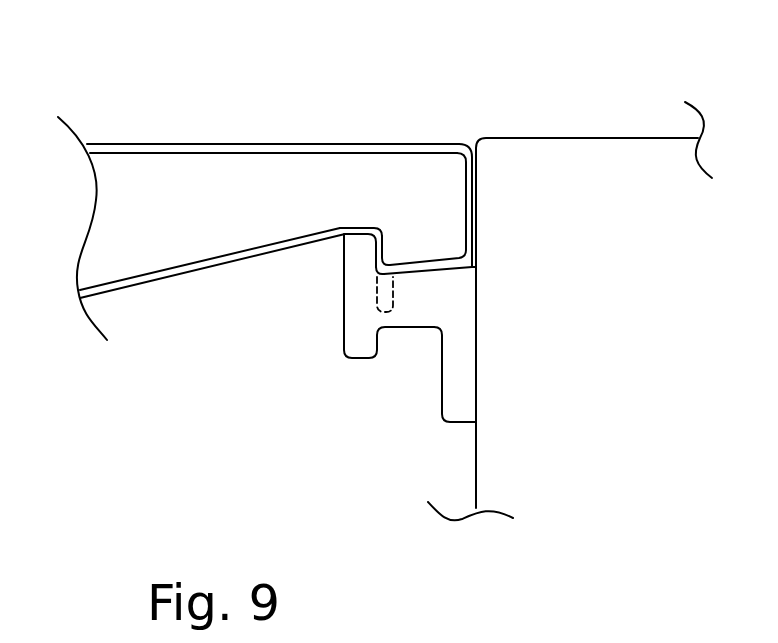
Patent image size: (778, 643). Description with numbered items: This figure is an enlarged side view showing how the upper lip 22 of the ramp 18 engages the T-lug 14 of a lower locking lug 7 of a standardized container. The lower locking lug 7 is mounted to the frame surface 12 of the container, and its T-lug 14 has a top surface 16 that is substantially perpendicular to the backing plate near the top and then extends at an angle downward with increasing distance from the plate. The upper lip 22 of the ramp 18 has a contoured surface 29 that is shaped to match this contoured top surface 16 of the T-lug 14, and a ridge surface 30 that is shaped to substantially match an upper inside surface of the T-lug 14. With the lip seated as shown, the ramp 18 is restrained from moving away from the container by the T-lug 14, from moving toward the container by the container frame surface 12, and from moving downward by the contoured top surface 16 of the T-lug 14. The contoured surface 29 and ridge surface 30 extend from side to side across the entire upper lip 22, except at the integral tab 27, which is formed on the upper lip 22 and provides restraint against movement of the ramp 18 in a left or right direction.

The lower locking lug 7 is at (455, 377).
The frame surface 12 is at (477, 210).
The T-lug 14 is at (343, 286).
The top surface 16 is at (436, 298).
The ramp 18 is at (216, 231).
The upper lip 22 is at (483, 118).
The integral tab 27 is at (380, 295).
The contoured surface 29 is at (437, 215).
The ridge surface 30 is at (371, 246).